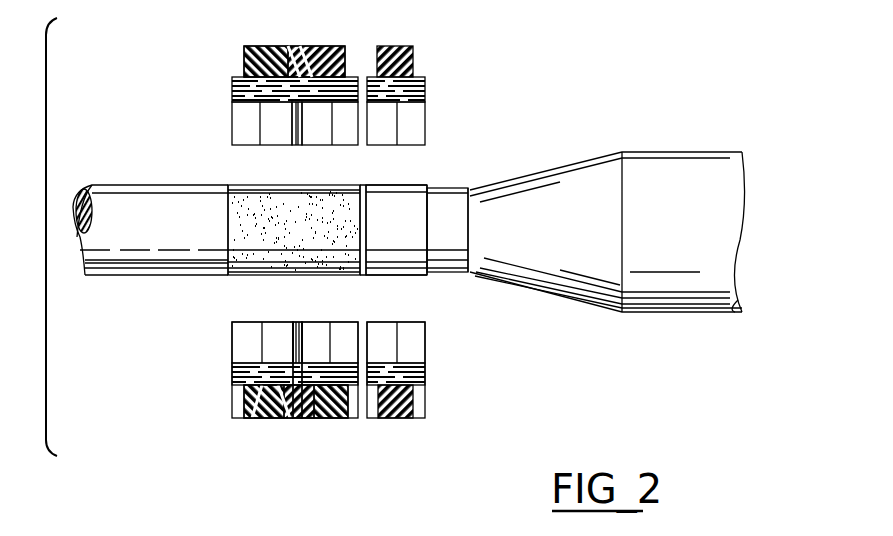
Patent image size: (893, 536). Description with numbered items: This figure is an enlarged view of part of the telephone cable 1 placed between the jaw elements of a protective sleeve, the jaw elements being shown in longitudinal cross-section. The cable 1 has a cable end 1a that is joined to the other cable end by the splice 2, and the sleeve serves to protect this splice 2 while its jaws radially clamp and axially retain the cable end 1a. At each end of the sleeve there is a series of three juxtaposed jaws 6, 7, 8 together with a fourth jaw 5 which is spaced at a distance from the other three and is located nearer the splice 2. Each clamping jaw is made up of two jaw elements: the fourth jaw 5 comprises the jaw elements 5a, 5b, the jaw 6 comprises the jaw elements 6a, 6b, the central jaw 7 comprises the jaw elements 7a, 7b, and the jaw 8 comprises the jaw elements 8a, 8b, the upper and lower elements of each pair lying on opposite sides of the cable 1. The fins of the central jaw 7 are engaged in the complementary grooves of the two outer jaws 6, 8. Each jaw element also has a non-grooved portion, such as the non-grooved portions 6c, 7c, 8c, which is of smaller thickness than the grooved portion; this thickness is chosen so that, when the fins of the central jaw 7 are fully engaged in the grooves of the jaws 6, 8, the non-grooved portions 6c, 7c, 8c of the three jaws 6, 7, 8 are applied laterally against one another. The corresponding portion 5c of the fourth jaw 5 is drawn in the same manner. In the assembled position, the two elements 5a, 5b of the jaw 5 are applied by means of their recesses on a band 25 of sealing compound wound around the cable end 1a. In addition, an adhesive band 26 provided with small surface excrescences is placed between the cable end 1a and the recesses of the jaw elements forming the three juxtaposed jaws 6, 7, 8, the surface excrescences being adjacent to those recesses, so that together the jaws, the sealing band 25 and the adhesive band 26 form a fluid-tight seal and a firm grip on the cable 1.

The telephone cable 1 is at (137, 182).
The cable end 1a is at (453, 250).
The splice 2 is at (678, 152).
The band of sealing compound 25 is at (405, 185).
The adhesive band 26 is at (228, 272).
The fourth jaw 5 is at (392, 423).
The jaw element 5a is at (425, 112).
The jaw element 5b is at (425, 347).
The hatched base of segment 5 5c is at (407, 422).
The jaw 6 is at (327, 423).
The jaw element 6a is at (345, 107).
The jaw element 6b is at (332, 353).
The non-grooved portion 6c is at (338, 422).
The central jaw 7 is at (292, 423).
The jaw element 7a is at (312, 113).
The jaw element 7b is at (302, 343).
The non-grooved portion 7c is at (308, 422).
The jaw 8 is at (253, 423).
The jaw element 8a is at (260, 120).
The jaw element 8b is at (262, 343).
The non-grooved portion 8c is at (270, 422).